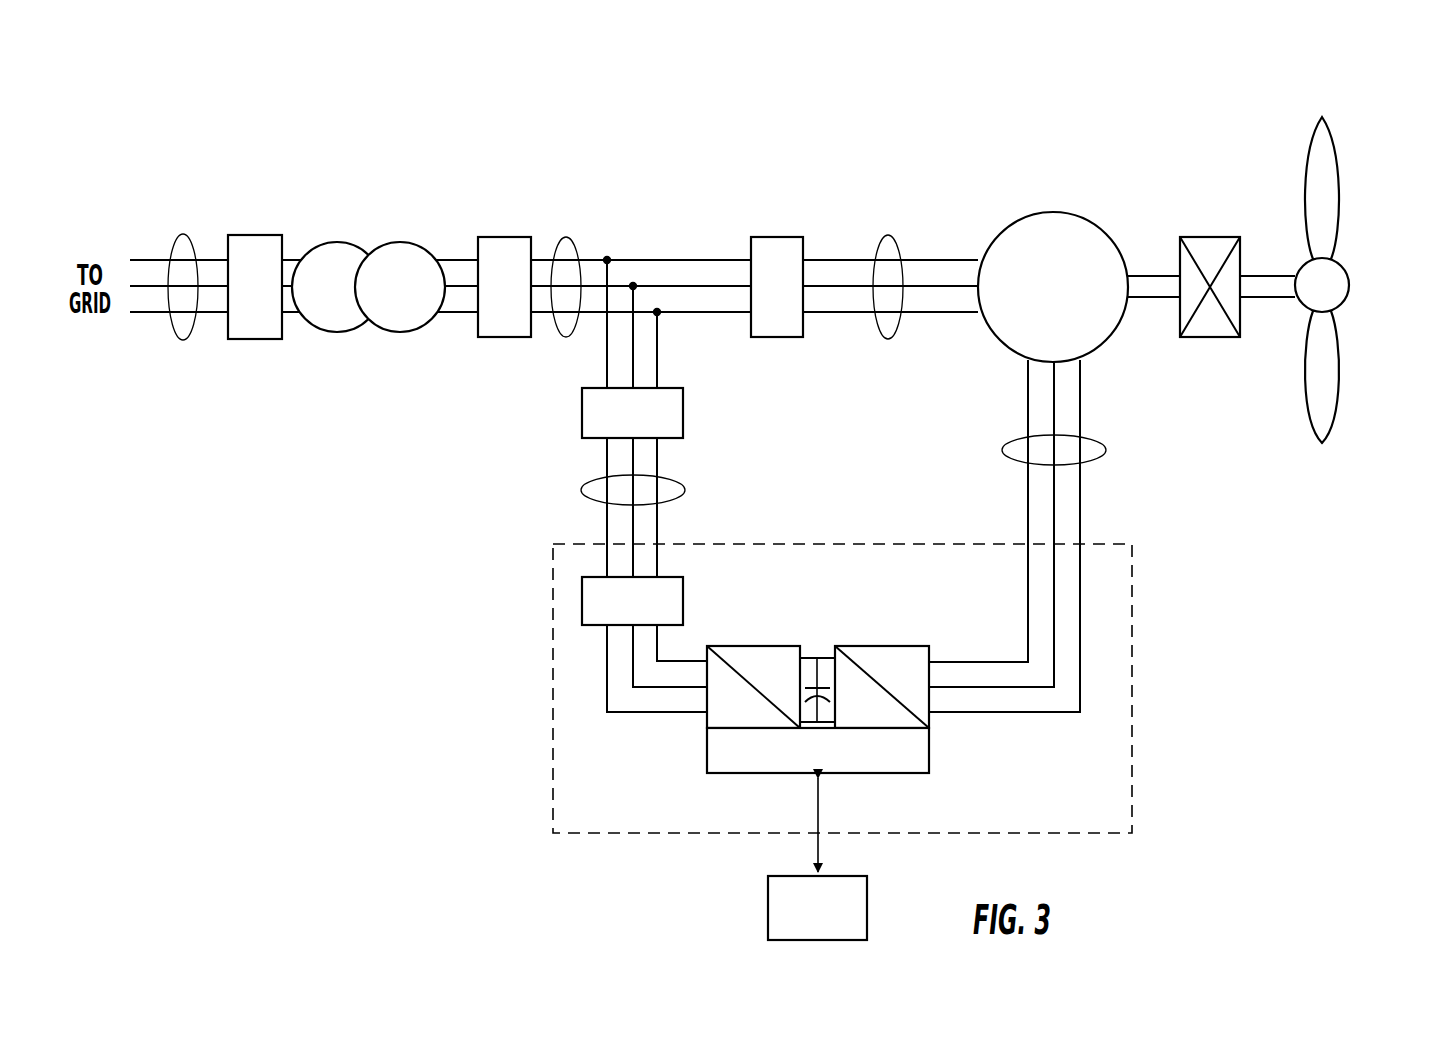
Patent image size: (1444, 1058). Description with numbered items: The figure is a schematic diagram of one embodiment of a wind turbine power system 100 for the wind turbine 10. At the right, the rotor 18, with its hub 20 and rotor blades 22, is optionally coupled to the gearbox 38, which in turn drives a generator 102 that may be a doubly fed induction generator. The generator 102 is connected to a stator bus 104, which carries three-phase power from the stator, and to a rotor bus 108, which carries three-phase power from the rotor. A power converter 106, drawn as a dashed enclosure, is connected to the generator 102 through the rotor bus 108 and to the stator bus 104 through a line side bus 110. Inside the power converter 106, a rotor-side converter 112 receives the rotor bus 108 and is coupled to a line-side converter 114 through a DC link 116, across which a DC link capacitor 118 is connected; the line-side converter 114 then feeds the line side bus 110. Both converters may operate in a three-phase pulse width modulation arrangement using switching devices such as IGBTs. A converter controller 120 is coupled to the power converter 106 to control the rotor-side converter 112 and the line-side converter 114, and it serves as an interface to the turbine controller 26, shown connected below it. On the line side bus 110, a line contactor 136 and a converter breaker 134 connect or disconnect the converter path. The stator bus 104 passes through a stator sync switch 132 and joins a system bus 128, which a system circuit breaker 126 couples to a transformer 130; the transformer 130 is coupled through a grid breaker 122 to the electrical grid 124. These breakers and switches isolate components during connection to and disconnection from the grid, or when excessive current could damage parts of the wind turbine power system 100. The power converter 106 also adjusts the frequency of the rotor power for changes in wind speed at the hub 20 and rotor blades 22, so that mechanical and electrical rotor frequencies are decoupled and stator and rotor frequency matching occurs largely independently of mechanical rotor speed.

The wind turbine 10 is at (1344, 96).
The rotor 18 is at (1360, 236).
The hub 20 is at (1349, 285).
The rotor blades 22 is at (1337, 168).
The turbine controller 26 is at (817, 859).
The gearbox 38 is at (1195, 237).
The wind turbine power system 100 is at (388, 110).
The generator 102 is at (1058, 212).
The stator bus 104 is at (890, 235).
The power converter 106 is at (1132, 632).
The rotor bus 108 is at (1107, 450).
The line side bus 110 is at (685, 490).
The rotor-side converter 112 is at (929, 720).
The line-side converter 114 is at (707, 720).
The DC link 116 is at (826, 658).
The DC link capacitor 118 is at (808, 680).
The converter controller 120 is at (742, 775).
The grid breaker 122 is at (265, 236).
The electrical grid 124 is at (183, 234).
The system circuit breaker 126 is at (500, 237).
The system bus 128 is at (565, 240).
The transformer 130 is at (400, 242).
The stator sync switch 132 is at (770, 237).
The converter breaker 134 is at (683, 420).
The line contactor 136 is at (683, 608).